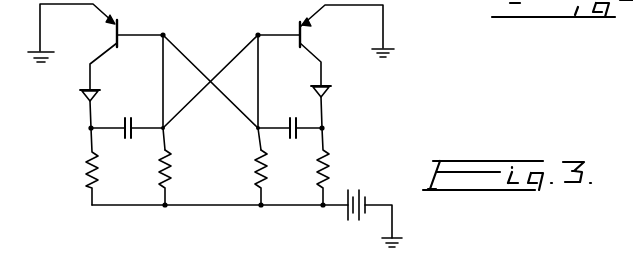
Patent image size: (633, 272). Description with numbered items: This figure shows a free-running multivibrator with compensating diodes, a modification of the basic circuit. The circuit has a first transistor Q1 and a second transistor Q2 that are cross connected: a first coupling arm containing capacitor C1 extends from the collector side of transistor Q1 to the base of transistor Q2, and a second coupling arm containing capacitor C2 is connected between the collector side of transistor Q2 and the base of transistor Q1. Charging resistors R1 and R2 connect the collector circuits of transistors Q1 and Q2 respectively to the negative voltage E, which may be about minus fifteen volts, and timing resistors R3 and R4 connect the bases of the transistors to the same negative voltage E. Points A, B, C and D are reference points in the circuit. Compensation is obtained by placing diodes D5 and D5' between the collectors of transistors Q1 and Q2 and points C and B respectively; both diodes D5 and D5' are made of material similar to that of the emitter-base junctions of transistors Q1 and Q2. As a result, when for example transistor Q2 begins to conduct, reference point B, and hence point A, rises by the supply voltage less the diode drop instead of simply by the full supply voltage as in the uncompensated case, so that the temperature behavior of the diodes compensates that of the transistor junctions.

The first transistor Q1 is at (126, 49).
The second transistor Q2 is at (289, 44).
The diode D5 is at (75, 109).
The diode D5' is at (336, 107).
The capacitor C1 is at (127, 119).
The capacitor C2 is at (290, 119).
The charging resistor R1 is at (78, 166).
The charging resistor R2 is at (310, 166).
The timing resistor R3 is at (153, 177).
The timing resistor R4 is at (247, 177).
The reference point A is at (172, 39).
The reference point B is at (328, 131).
The reference point C is at (83, 131).
The reference point D is at (250, 38).
The negative voltage E is at (243, 175).